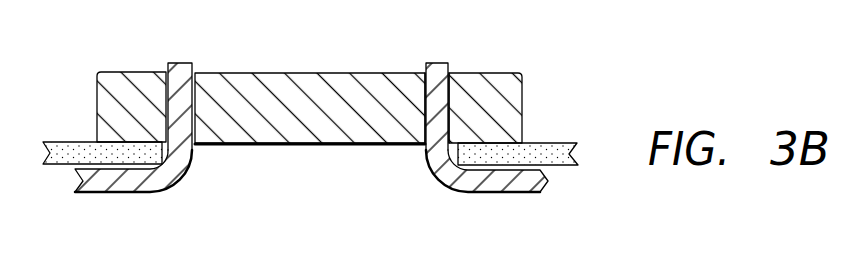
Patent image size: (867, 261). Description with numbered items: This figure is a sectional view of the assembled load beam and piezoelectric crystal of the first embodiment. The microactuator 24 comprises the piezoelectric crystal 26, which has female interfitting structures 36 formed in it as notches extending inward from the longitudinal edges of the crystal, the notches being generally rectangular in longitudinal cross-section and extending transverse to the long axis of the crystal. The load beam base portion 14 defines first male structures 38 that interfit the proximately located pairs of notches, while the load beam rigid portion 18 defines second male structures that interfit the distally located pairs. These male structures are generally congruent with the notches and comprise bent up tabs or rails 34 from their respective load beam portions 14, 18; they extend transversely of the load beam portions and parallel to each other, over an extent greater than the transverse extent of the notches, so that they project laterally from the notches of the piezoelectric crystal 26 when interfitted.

The load beam base portion 14 is at (513, 194).
The load beam rigid portion 18 is at (147, 193).
The microactuator 24 is at (523, 105).
The piezoelectric crystal 26 is at (108, 78).
The bent up tabs or rails 34 is at (178, 68).
The female interfitting structures 36 is at (425, 72).
The first male structures 38 is at (440, 86).